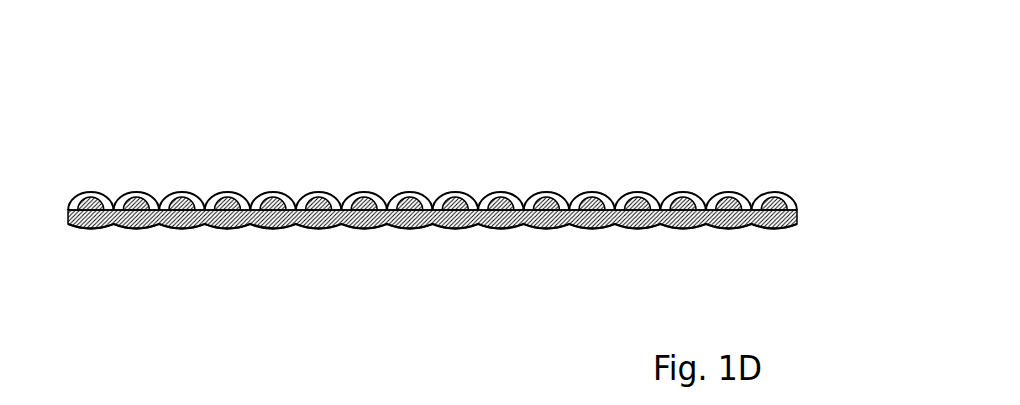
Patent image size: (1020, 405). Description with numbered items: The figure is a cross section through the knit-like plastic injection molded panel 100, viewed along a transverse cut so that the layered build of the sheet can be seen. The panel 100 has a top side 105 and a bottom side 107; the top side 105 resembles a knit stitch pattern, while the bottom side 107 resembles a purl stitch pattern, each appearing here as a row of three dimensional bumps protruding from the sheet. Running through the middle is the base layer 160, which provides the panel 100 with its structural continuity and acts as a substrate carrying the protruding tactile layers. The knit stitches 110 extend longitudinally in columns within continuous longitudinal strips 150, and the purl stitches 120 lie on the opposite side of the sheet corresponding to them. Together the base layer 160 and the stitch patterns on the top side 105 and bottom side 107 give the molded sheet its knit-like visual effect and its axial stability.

The knit-like plastic injection molded panel 100 is at (462, 172).
The top side 105 is at (382, 140).
The bottom side 107 is at (373, 245).
The knit stitch 110 is at (680, 178).
The purl stitch 120 is at (550, 243).
The longitudinal strip 150 is at (137, 168).
The base layer 160 is at (538, 203).